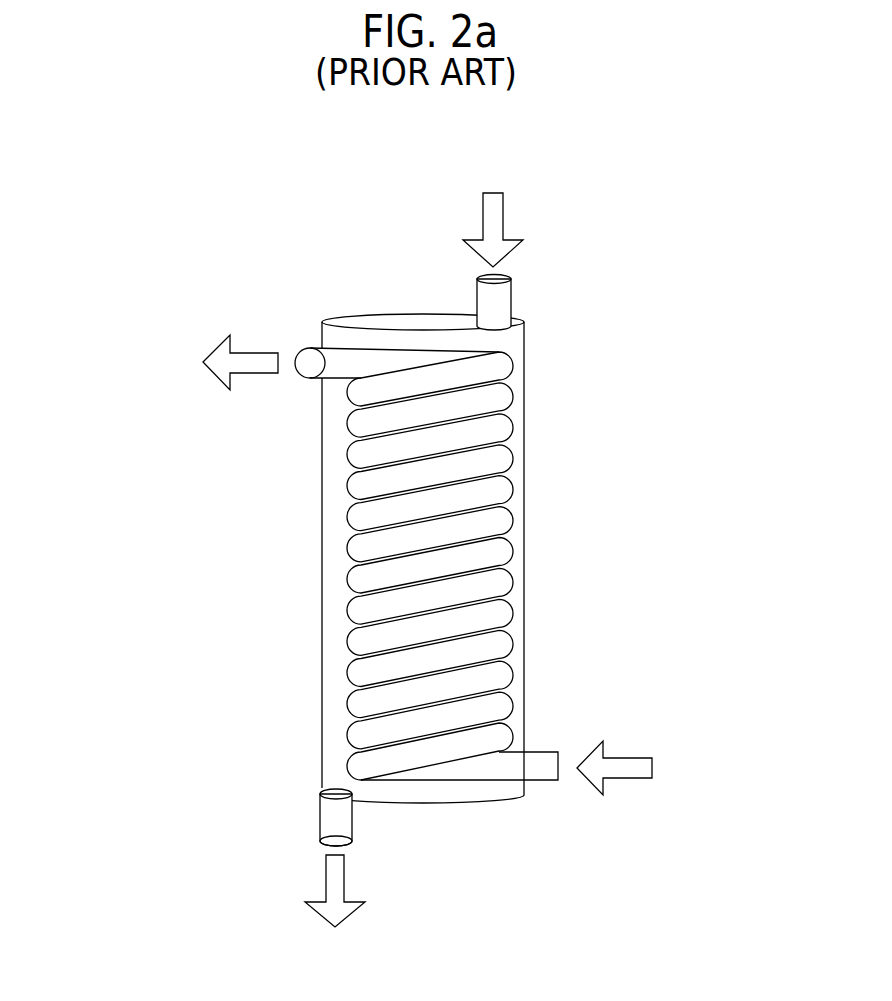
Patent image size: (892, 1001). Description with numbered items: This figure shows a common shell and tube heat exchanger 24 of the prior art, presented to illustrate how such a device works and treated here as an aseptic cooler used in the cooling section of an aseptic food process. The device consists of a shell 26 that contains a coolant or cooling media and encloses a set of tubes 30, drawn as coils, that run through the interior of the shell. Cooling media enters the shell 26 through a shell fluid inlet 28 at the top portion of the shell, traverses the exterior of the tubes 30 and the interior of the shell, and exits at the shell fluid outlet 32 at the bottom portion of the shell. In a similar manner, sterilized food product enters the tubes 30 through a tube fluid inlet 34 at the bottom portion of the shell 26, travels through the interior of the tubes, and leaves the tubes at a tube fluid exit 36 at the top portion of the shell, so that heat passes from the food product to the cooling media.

The shell and tube heat exchanger 24 is at (587, 190).
The shell 26 is at (322, 566).
The shell fluid inlet 28 is at (510, 302).
The tubes 30 is at (485, 495).
The shell fluid outlet 32 is at (320, 820).
The tube fluid inlet 34 is at (540, 772).
The tube fluid exit 36 is at (307, 348).